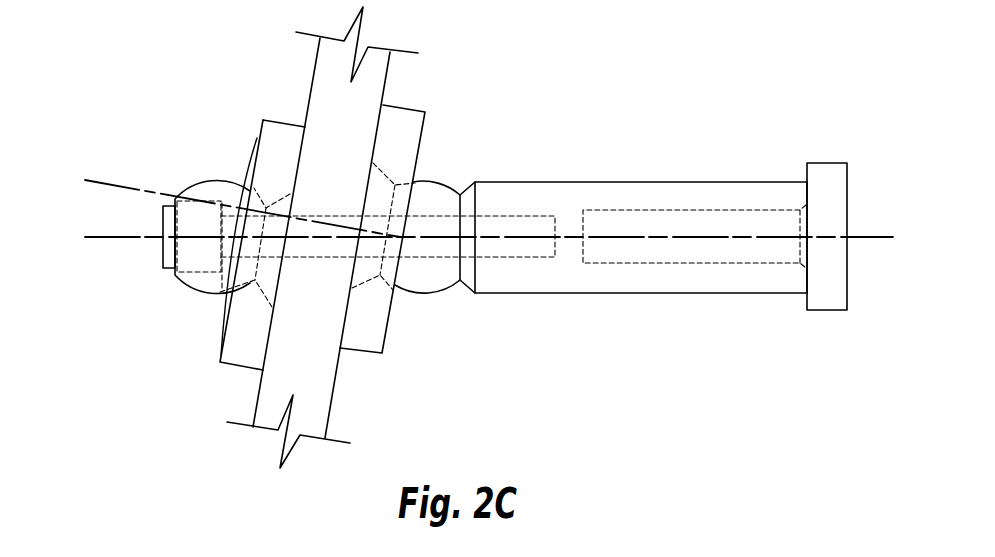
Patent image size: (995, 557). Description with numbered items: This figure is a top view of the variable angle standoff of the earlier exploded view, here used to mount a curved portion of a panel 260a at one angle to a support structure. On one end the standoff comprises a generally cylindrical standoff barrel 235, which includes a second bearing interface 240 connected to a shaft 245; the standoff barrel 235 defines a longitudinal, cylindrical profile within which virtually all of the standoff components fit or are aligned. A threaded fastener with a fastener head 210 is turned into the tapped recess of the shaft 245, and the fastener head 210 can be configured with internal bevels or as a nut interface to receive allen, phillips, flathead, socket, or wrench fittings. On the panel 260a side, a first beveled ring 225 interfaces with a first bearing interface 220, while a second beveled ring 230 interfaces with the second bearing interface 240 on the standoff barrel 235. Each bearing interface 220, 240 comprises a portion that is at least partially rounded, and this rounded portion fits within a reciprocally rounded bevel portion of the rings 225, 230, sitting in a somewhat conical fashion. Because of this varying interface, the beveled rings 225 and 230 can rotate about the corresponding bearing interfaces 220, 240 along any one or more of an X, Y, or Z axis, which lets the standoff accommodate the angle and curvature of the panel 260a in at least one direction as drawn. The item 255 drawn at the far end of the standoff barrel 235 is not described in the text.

The fastener head 210 is at (163, 218).
The first bearing interface 220 is at (205, 282).
The first beveled ring 225 is at (245, 350).
The second beveled ring 230 is at (363, 337).
The standoff barrel 235 is at (637, 169).
The second bearing interface 240 is at (427, 275).
The shaft 245 is at (622, 282).
The end cap 255 is at (830, 178).
The panel 260a is at (320, 85).